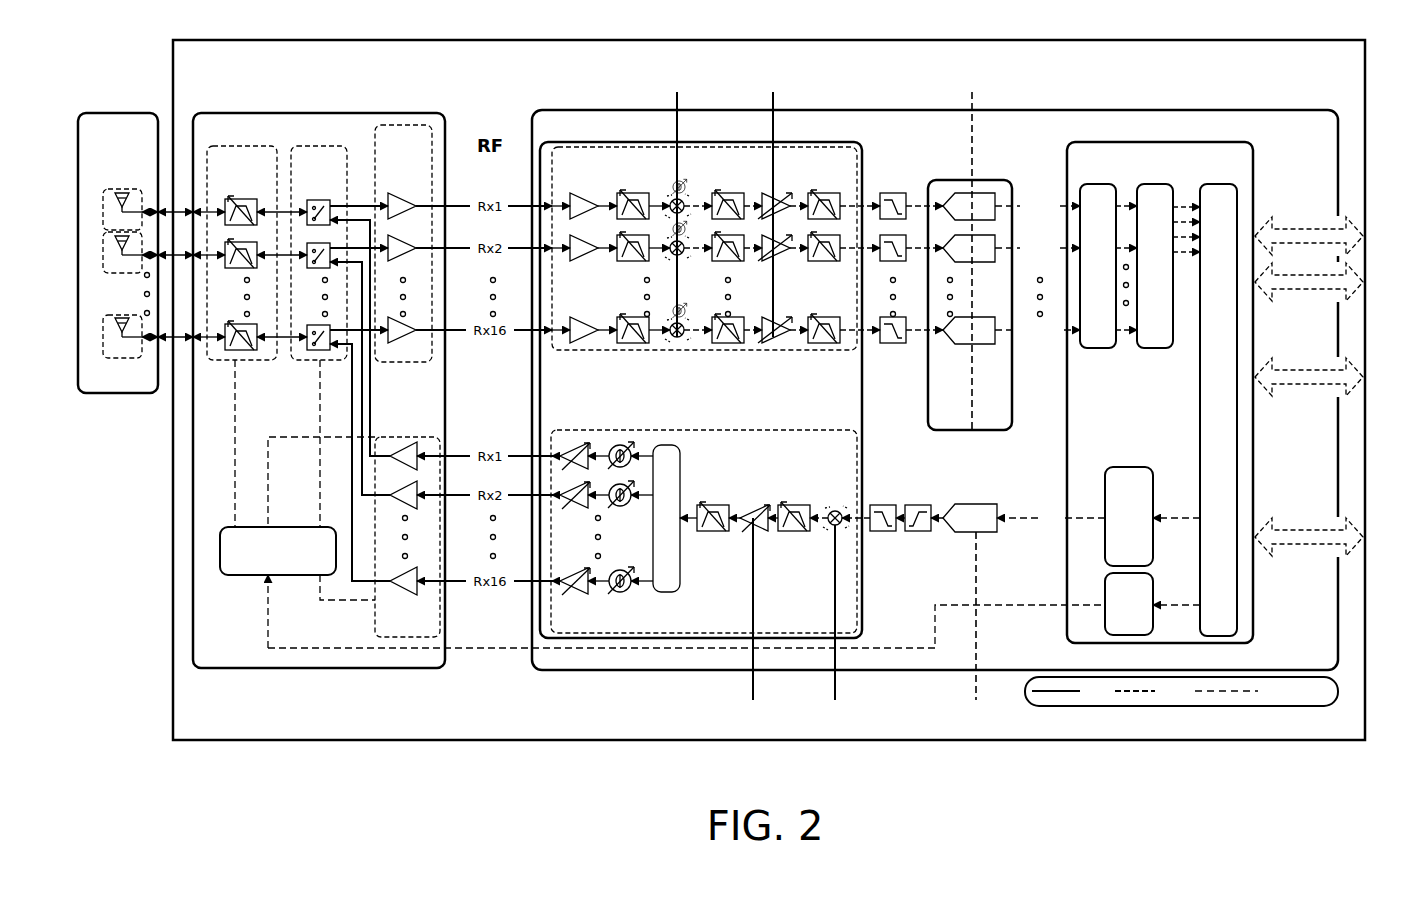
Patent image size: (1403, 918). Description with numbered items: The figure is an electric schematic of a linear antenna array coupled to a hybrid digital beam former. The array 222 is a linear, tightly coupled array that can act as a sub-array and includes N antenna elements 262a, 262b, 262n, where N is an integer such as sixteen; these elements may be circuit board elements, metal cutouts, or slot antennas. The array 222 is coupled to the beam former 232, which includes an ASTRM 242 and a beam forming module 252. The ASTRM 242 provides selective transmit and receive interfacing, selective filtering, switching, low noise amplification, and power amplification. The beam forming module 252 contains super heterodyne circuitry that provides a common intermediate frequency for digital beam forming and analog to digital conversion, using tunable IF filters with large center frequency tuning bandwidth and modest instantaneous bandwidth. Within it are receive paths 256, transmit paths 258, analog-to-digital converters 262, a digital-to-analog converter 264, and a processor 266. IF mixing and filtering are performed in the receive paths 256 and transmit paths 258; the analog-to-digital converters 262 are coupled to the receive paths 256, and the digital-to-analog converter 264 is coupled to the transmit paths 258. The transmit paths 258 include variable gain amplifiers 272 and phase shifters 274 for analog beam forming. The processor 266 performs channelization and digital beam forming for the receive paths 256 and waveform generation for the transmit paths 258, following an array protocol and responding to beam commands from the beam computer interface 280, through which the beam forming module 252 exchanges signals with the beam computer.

The array 222 is at (98, 237).
The beam former 232 is at (1160, 40).
The ASTRM 242 is at (308, 113).
The beam forming module 252 is at (1058, 110).
The receive paths 256 is at (803, 351).
The transmit paths 258 is at (762, 428).
The analog-to-digital converters 262 is at (988, 180).
The antenna element 262a is at (103, 200).
The antenna element 262b is at (103, 257).
The antenna element 262n is at (103, 338).
The digital-to-analog converter 264 is at (975, 533).
The processor 266 is at (1210, 142).
The variable gain amplifiers 272 is at (578, 649).
The phase shifters 274 is at (628, 649).
The beam computer interface 280 is at (1386, 557).